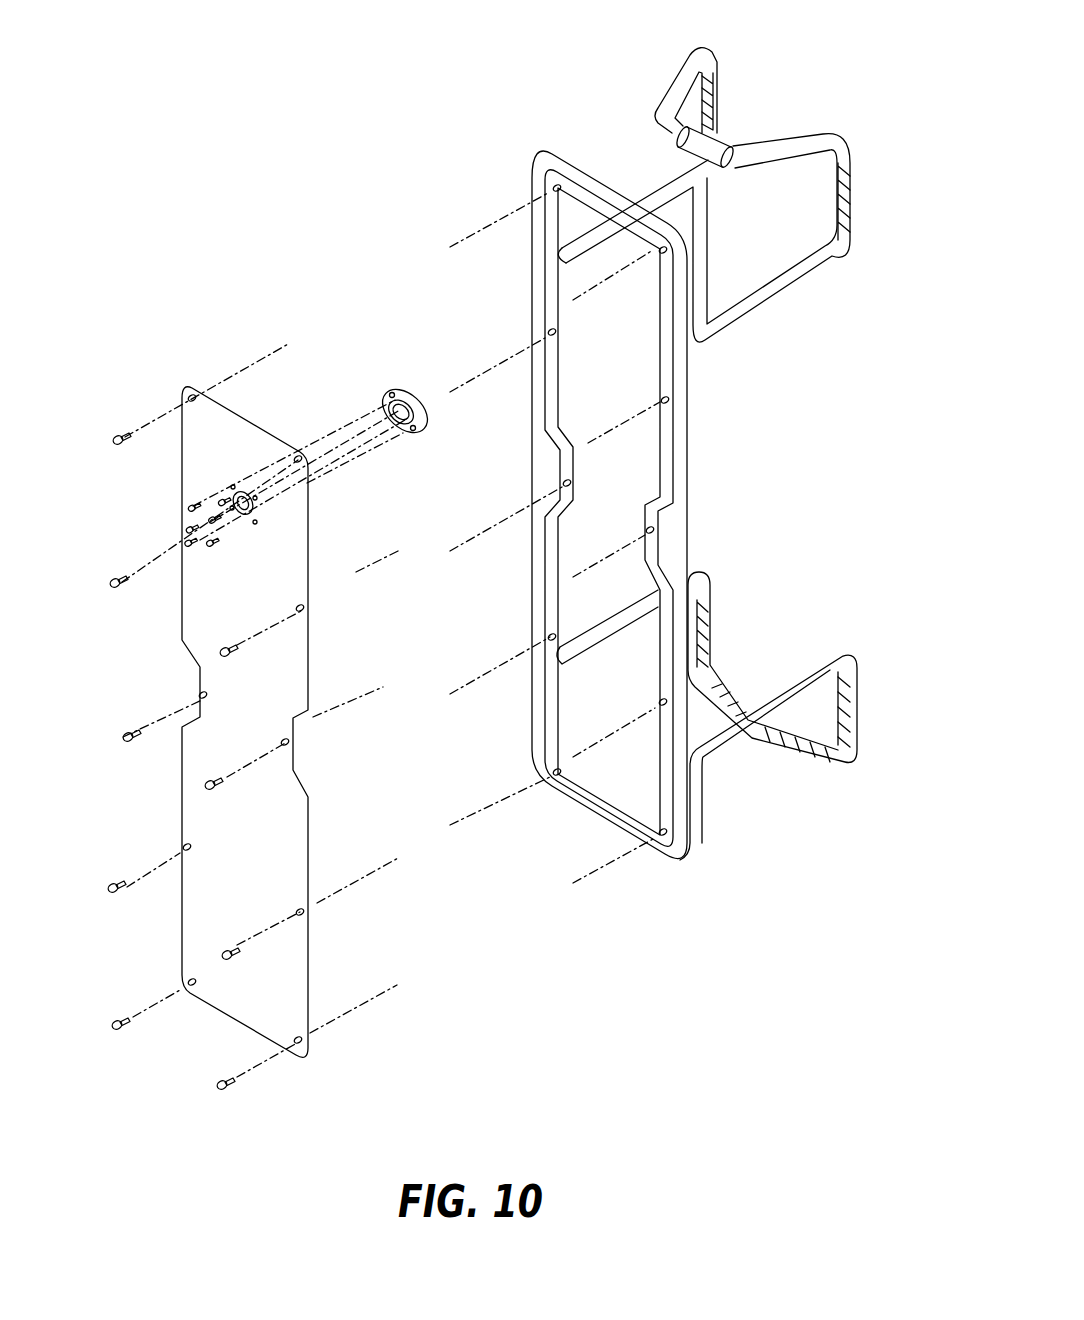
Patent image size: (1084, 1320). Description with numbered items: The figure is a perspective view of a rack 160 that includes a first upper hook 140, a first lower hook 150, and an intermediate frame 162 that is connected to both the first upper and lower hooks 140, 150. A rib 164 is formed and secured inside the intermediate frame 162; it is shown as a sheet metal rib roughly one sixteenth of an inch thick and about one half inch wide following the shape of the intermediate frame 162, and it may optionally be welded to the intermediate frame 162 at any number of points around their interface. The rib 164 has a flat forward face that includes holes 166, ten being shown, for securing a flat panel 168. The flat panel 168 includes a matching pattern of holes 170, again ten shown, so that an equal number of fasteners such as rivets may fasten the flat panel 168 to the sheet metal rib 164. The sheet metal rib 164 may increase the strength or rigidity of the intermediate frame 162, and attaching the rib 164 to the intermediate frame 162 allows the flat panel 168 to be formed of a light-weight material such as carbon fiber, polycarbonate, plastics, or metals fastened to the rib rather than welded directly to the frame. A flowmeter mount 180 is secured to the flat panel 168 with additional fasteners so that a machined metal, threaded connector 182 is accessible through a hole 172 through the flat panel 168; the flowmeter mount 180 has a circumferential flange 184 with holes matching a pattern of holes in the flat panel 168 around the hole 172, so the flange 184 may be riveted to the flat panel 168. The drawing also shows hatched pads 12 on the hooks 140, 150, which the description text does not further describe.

The pad 12 is at (710, 93).
The first upper hook 140 is at (793, 88).
The first lower hook 150 is at (797, 578).
The rack 160 is at (582, 459).
The intermediate frame 162 is at (540, 446).
The rib 164 is at (556, 382).
The holes 166 is at (553, 166).
The flat panel 168 is at (238, 674).
The holes 170 is at (188, 396).
The hole 172 is at (257, 512).
The flowmeter mount 180 is at (408, 403).
The threaded connector 182 is at (392, 440).
The circumferential flange 184 is at (430, 428).